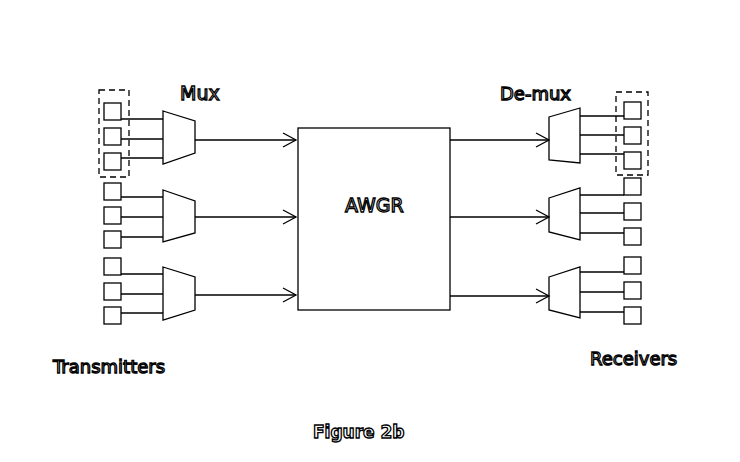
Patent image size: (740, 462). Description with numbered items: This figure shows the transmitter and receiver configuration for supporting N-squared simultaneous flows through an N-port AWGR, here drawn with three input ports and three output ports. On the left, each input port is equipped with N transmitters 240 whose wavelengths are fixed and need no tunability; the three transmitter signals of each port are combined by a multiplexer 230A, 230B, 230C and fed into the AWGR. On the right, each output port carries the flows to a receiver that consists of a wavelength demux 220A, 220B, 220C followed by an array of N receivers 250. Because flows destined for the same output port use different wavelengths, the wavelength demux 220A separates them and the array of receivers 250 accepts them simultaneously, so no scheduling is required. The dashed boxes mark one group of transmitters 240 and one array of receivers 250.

The transmitters 240 is at (122, 78).
The array of N receivers 250 is at (643, 82).
The multiplexer 230A is at (197, 167).
The multiplexer 230B is at (187, 247).
The multiplexer 230C is at (187, 326).
The wavelength demux 220A is at (546, 156).
The demultiplexer 220B is at (550, 244).
The demultiplexer 220C is at (550, 326).